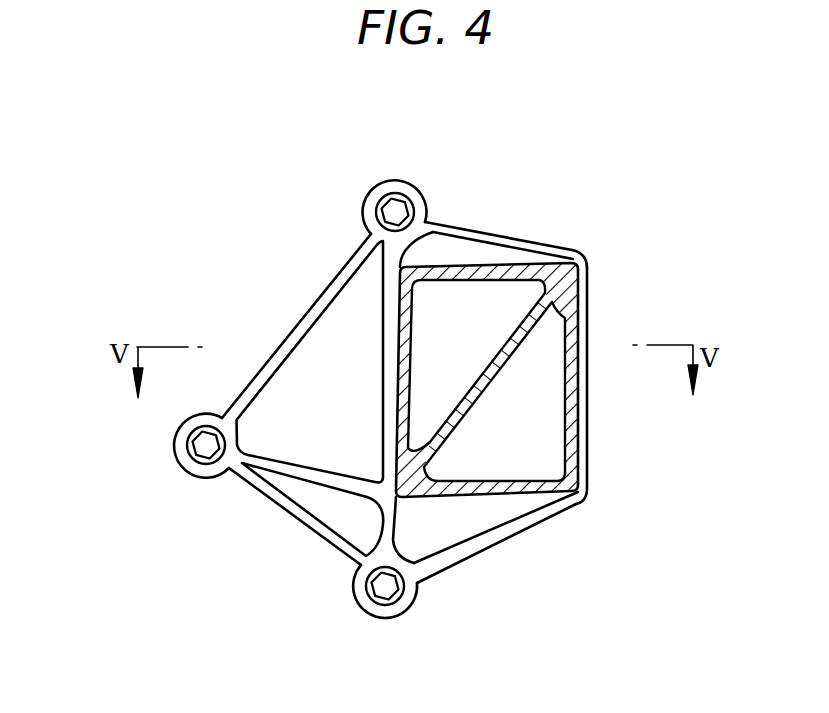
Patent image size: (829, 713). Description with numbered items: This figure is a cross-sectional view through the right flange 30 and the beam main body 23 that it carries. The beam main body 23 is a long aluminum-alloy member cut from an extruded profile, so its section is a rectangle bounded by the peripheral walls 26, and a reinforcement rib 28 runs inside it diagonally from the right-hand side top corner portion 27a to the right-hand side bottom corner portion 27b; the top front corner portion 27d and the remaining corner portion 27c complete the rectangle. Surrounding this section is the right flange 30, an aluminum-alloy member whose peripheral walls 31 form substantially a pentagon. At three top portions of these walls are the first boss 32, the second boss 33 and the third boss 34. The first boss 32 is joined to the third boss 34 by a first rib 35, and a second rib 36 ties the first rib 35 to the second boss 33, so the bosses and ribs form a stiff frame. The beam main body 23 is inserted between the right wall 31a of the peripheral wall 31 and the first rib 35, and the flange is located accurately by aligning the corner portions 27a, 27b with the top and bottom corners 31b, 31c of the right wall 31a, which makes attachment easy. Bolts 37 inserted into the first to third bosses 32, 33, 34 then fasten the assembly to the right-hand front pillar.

The beam main body 23 is at (500, 238).
The peripheral wall 26 is at (521, 266).
The corner portion 27a is at (579, 278).
The corner portion 27b is at (583, 488).
The bracket vertical web 27c is at (392, 515).
The top front corner portion 27d is at (443, 226).
The reinforcement rib 28 is at (507, 373).
The right flange 30 is at (262, 330).
The peripheral wall 31 is at (318, 298).
The right wall 31a is at (588, 362).
The top corner 31b is at (578, 261).
The bottom corner 31c is at (588, 497).
The first boss 32 is at (381, 182).
The second boss 33 is at (187, 464).
The third boss 34 is at (418, 590).
The first rib 35 is at (383, 348).
The second rib 36 is at (303, 498).
The bolt 37 is at (390, 211).